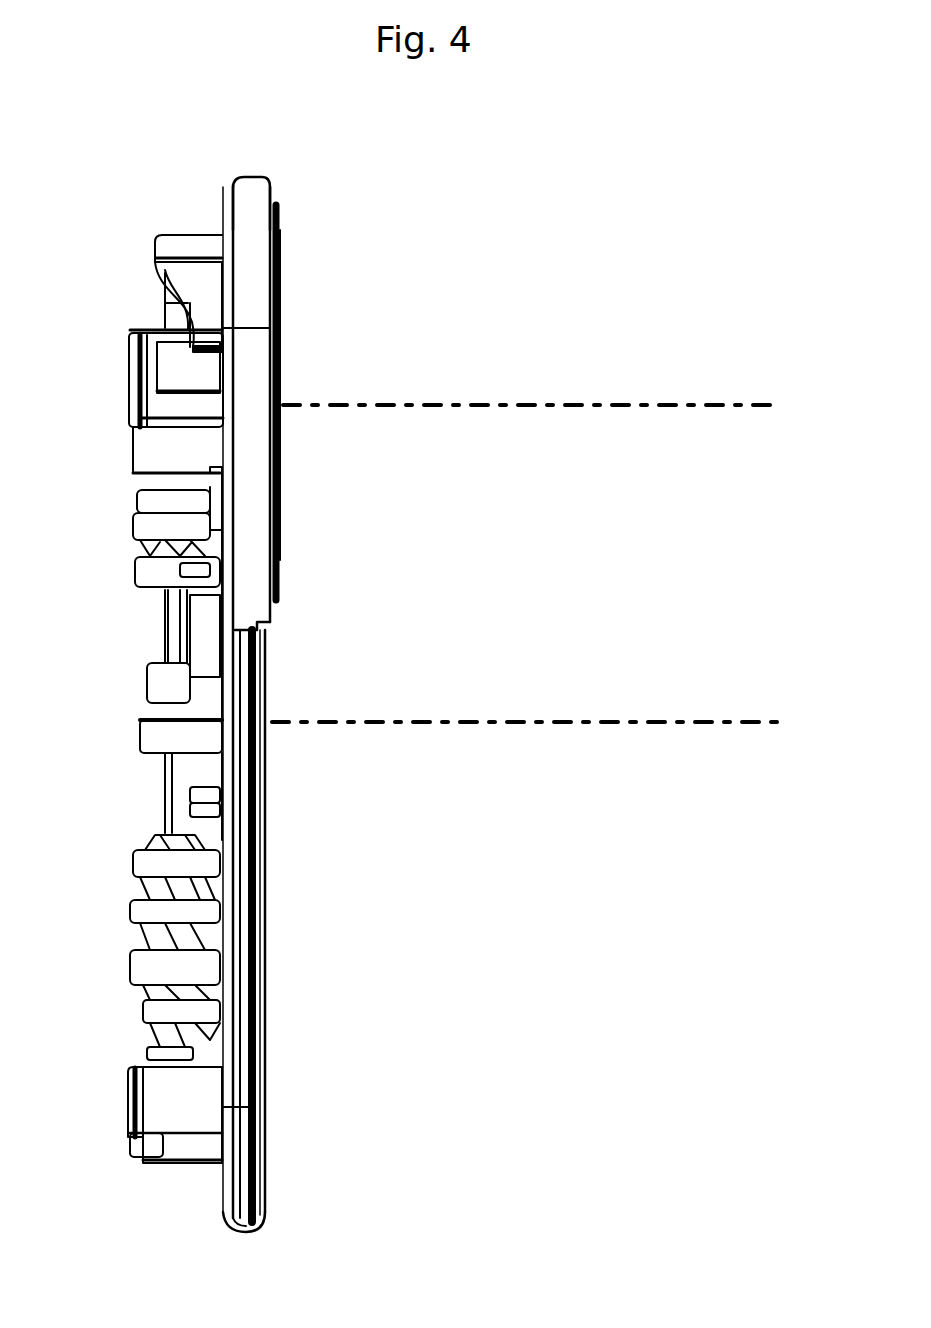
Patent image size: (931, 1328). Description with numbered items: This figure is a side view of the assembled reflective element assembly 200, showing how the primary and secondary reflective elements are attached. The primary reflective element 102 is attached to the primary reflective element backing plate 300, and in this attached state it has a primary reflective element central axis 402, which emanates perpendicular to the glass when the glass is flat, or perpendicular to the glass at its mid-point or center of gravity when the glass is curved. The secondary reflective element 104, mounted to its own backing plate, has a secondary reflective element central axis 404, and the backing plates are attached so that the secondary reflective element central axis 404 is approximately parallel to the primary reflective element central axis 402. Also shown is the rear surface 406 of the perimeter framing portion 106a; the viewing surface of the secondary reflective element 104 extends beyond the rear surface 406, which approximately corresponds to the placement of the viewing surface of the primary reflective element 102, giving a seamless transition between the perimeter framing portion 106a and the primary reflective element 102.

The primary reflective element 102 is at (261, 1122).
The secondary reflective element 104 is at (283, 378).
The perimeter framing portion 106a is at (255, 620).
The reflective element assembly 200 is at (541, 1043).
The primary reflective element backing plate 300 is at (245, 1190).
The primary reflective element central axis 402 is at (515, 722).
The secondary reflective element central axis 404 is at (530, 405).
The rear surface 406 is at (270, 187).